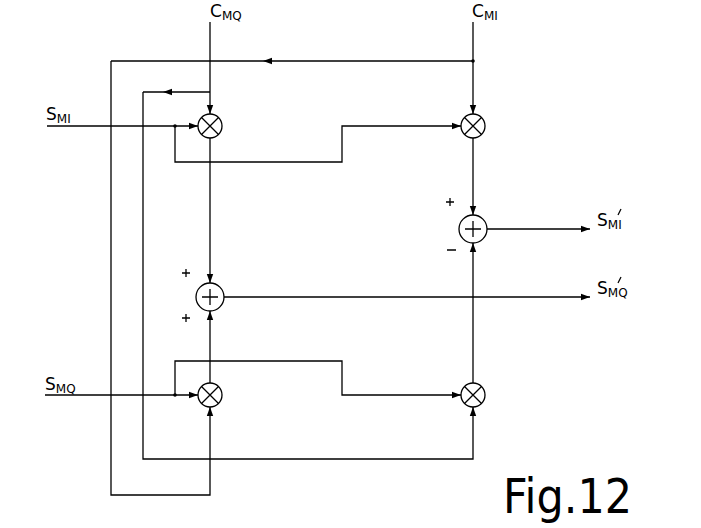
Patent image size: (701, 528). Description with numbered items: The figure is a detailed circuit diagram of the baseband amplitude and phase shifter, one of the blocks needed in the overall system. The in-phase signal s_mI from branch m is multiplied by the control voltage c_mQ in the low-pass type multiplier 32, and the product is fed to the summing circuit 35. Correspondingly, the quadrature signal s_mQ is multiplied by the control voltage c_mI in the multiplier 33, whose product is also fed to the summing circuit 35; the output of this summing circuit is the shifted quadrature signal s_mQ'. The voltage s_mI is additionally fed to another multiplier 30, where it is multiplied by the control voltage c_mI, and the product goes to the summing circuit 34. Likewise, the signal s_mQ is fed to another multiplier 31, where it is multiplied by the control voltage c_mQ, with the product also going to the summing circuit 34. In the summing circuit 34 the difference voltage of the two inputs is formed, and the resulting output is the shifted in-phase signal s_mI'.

The multiplier 30 is at (485, 126).
The multiplier 31 is at (485, 395).
The low-pass type multiplier 32 is at (222, 126).
The multiplier 33 is at (222, 395).
The summing circuit 34 is at (484, 220).
The summing circuit 35 is at (221, 288).